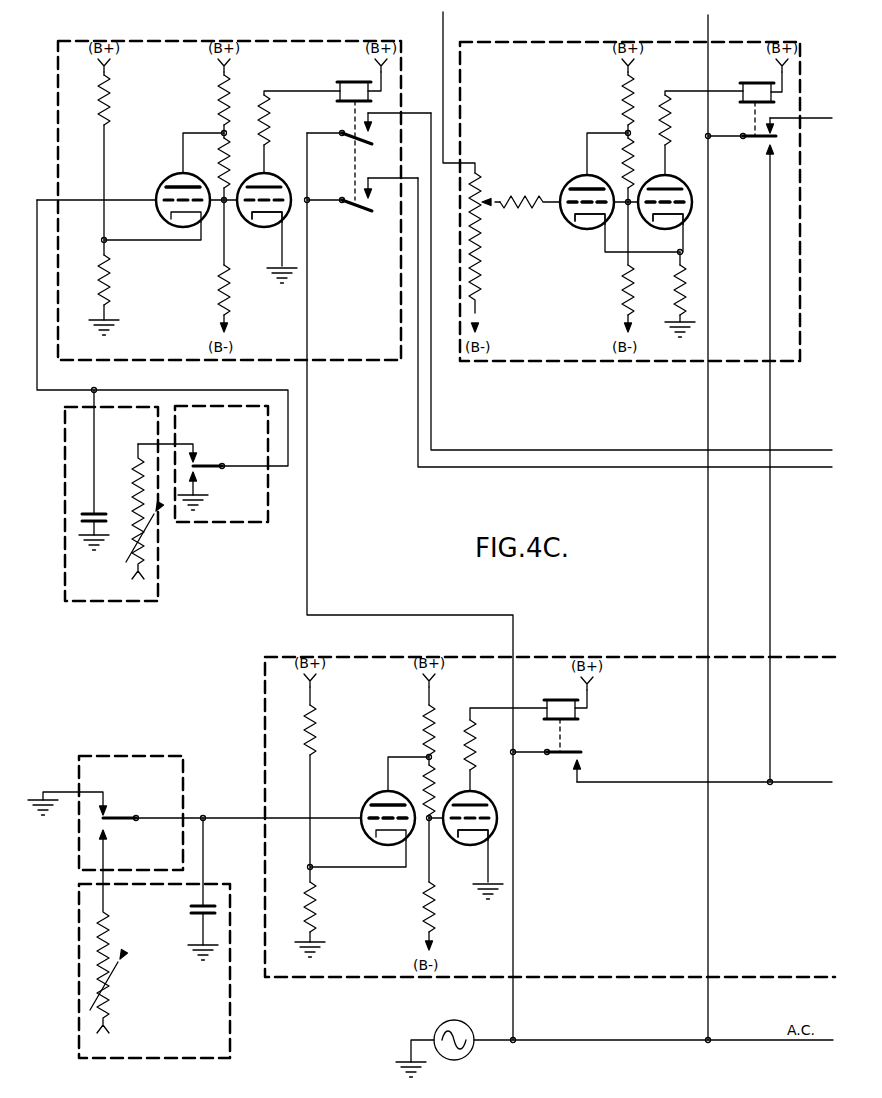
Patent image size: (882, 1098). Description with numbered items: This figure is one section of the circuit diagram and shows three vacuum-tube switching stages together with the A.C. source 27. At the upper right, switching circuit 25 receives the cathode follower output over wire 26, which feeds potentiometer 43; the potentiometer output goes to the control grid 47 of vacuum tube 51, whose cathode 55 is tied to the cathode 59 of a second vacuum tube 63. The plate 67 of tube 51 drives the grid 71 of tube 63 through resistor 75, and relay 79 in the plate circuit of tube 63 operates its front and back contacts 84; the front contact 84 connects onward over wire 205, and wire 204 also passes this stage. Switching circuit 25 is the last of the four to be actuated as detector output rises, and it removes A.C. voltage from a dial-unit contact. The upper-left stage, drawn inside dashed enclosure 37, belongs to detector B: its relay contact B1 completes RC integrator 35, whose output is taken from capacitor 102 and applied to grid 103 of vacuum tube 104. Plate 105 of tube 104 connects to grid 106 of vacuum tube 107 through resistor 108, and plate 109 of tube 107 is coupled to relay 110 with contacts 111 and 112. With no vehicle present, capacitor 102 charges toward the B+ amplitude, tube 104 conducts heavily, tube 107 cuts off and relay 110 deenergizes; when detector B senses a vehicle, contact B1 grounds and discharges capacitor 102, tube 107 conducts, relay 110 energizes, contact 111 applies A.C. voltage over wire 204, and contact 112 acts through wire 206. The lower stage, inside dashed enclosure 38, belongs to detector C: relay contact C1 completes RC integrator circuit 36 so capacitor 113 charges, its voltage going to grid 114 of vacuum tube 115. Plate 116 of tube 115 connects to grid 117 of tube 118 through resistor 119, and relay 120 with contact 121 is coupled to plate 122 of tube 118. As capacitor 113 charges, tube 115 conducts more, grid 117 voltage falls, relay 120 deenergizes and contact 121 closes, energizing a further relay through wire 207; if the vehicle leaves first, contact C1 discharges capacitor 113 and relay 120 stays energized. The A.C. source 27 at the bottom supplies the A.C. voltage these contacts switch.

The switching circuit 25 is at (503, 42).
The wire 26 is at (441, 50).
The A.C. source 27 is at (457, 1021).
The RC integrator 35 is at (65, 548).
The RC integrator circuit 36 is at (79, 925).
The dashed enclosure of first amplifier unit 37 is at (90, 41).
The dashed enclosure of third amplifier unit 38 is at (265, 704).
The potentiometer 43 is at (480, 200).
The control grid 47 is at (570, 205).
The vacuum tube 51 is at (566, 186).
The cathode 55 is at (596, 222).
The cathode 59 is at (680, 222).
The second vacuum tube 63 is at (690, 178).
The plate 67 is at (584, 186).
The grid 71 is at (655, 212).
The resistor 75 is at (632, 178).
The relay 79 is at (754, 83).
The front and back contacts 84 is at (760, 140).
The capacitor 102 is at (98, 513).
The grid 103 is at (165, 198).
The vacuum tube 104 is at (170, 185).
The plate 105 is at (196, 186).
The grid 106 is at (256, 212).
The vacuum tube 107 is at (280, 186).
The resistor 108 is at (223, 148).
The plate 109 is at (262, 186).
The relay 110 is at (352, 82).
The contact 111 is at (369, 137).
The contact 112 is at (362, 204).
The capacitor 113 is at (193, 908).
The grid 114 is at (370, 822).
The vacuum tube 115 is at (370, 796).
The plate 116 is at (395, 803).
The grid 117 is at (468, 838).
The tube 118 is at (475, 760).
The resistor 119 is at (436, 780).
The relay 120 is at (555, 700).
The contact 121 is at (562, 756).
The plate 122 is at (456, 804).
The wire 204 is at (825, 450).
The wire 205 is at (774, 118).
The wire 206 is at (825, 467).
The wire 207 is at (772, 782).
The detector B is at (214, 522).
The relay contact B1 is at (202, 470).
The detector C is at (79, 787).
The relay contact C1 is at (110, 822).